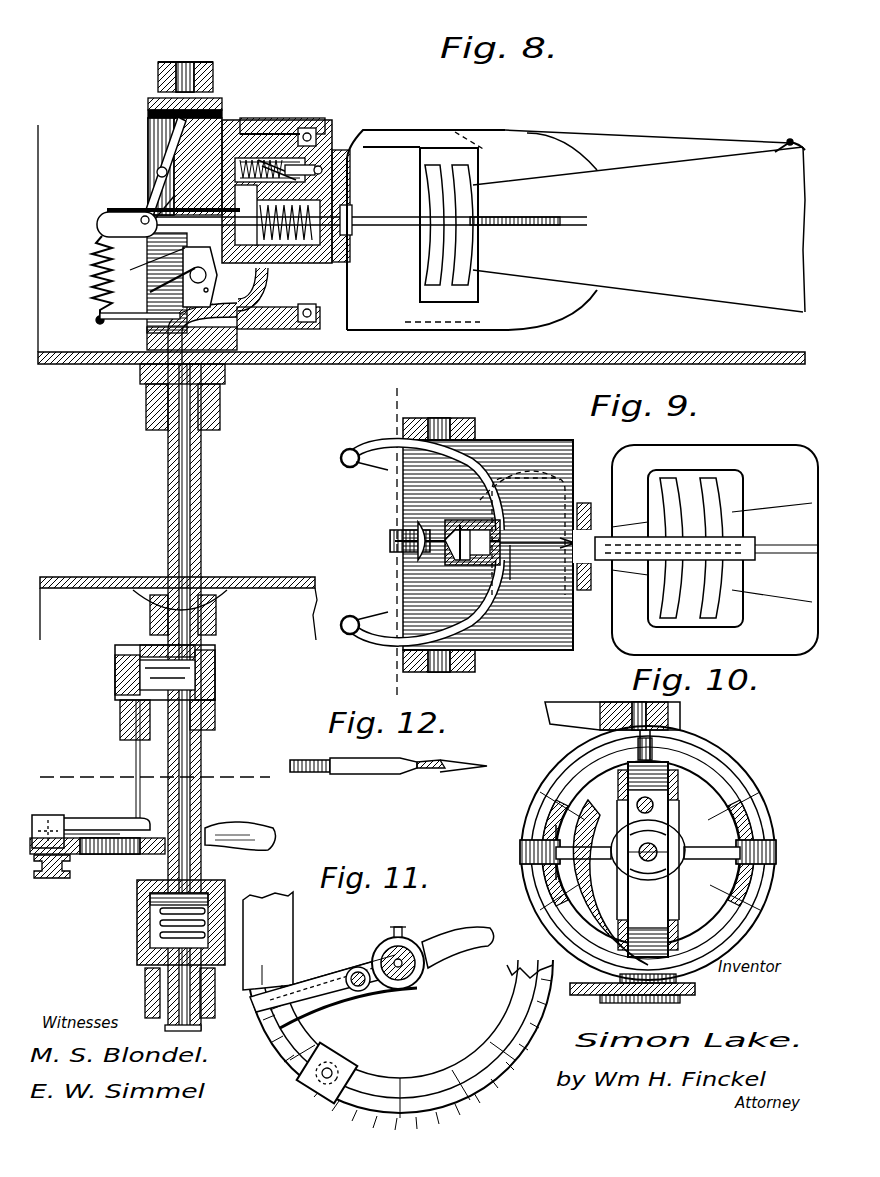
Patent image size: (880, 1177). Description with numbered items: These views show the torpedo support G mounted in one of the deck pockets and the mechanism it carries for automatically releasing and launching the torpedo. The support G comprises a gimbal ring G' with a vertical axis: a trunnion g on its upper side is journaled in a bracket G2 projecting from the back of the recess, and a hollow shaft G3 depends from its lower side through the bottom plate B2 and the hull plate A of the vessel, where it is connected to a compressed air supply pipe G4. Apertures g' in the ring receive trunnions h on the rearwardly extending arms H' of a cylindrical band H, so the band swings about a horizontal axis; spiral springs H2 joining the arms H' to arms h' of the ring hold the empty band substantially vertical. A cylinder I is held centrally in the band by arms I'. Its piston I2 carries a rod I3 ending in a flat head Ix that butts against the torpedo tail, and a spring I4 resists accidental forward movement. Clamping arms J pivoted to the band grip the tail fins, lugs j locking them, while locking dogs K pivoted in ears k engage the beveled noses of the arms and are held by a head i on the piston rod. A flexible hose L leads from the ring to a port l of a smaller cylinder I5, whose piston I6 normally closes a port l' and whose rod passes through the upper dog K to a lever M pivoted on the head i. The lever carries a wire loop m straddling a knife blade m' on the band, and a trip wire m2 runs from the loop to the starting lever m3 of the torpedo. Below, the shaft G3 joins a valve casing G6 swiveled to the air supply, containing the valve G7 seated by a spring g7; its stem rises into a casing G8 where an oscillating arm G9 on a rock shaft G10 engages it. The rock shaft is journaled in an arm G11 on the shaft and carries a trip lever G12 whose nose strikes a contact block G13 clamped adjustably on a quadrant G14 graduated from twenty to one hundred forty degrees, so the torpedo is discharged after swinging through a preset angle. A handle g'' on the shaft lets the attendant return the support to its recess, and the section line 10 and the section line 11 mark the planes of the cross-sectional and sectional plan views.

In FIG. 8, the trunnion g is at (185, 67).
In FIG. 10, the trunnion g is at (672, 732).
In FIG. 8, the bracket G2 is at (206, 64).
In FIG. 10, the bracket G2 is at (592, 703).
In FIG. 8, the support G is at (277, 163).
In FIG. 9, the support G is at (488, 526).
In FIG. 10, the support G is at (648, 853).
In FIG. 8, the gimbal ring G' is at (165, 148).
In FIG. 10, the gimbal ring G' is at (647, 847).
In FIG. 8, the wire loop m is at (275, 113).
In FIG. 9, the wire loop m is at (537, 573).
In FIG. 12, the wire loop m is at (373, 779).
In FIG. 8, the knife blade m' is at (270, 114).
In FIG. 9, the knife blade m' is at (455, 566).
In FIG. 10, the knife blade m' is at (681, 741).
In FIG. 12, the knife blade m' is at (411, 780).
In FIG. 8, the cylinder I5 is at (283, 157).
In FIG. 8, the piston I6 is at (290, 172).
In FIG. 8, the clamping arms J is at (378, 128).
In FIG. 9, the clamping arms J is at (628, 560).
In FIG. 8, the lugs j is at (440, 326).
In FIG. 9, the lugs j is at (700, 545).
In FIG. 8, the trip wire m2 is at (572, 126).
In FIG. 9, the trip wire m2 is at (790, 558).
In FIG. 12, the trip wire m2 is at (475, 763).
In FIG. 8, the tripping or starting lever m3 is at (782, 154).
In FIG. 8, the locking dogs K is at (156, 156).
In FIG. 9, the locking dogs K is at (445, 555).
In FIG. 10, the locking dogs K is at (672, 780).
In FIG. 8, the ears k is at (192, 291).
In FIG. 9, the ears k is at (458, 522).
In FIG. 10, the ears k is at (620, 798).
In FIG. 8, the lever M is at (160, 178).
In FIG. 9, the lever M is at (390, 541).
In FIG. 12, the lever M is at (304, 760).
In FIG. 8, the port l is at (303, 172).
In FIG. 8, the port l' is at (142, 209).
In FIG. 8, the arms H' is at (107, 222).
In FIG. 9, the arms H' is at (426, 553).
In FIG. 10, the arms H' is at (637, 839).
In FIG. 8, the spiral springs H2 is at (92, 262).
In FIG. 9, the spiral springs H2 is at (346, 468).
In FIG. 8, the band H is at (278, 349).
In FIG. 9, the band H is at (488, 533).
In FIG. 10, the band H is at (534, 824).
In FIG. 9, the trunnions h is at (439, 549).
In FIG. 10, the trunnions h is at (648, 853).
In FIG. 8, the arms h' is at (121, 328).
In FIG. 9, the arms h' is at (372, 541).
In FIG. 8, the cylinder I is at (341, 227).
In FIG. 9, the cylinder I is at (584, 529).
In FIG. 10, the cylinder I is at (656, 843).
In FIG. 10, the arms I' is at (642, 835).
In FIG. 8, the piston I2 is at (255, 284).
In FIG. 8, the piston rod I3 is at (151, 260).
In FIG. 10, the piston rod I3 is at (640, 858).
In FIG. 8, the spring I4 is at (327, 248).
In FIG. 8, the flat head Ix is at (337, 228).
In FIG. 8, the flexible pipe or hose section L is at (232, 335).
In FIG. 9, the flexible pipe or hose section L is at (498, 474).
In FIG. 10, the flexible pipe or hose section L is at (580, 888).
In FIG. 8, the bottom plates B2 is at (626, 357).
In FIG. 8, the hollow shaft G3 is at (167, 466).
In FIG. 11, the hollow shaft G3 is at (418, 972).
In FIG. 8, the deck plate A is at (88, 577).
In FIG. 8, the oscillating arm G9 is at (150, 662).
In FIG. 8, the casing G8 is at (215, 690).
In FIG. 8, the rock shaft G10 is at (134, 766).
In FIG. 11, the rock shaft G10 is at (362, 990).
In FIG. 8, the arm G11 is at (120, 855).
In FIG. 11, the arm G11 is at (345, 968).
In FIG. 8, the trip lever G12 is at (95, 817).
In FIG. 11, the trip lever G12 is at (328, 998).
In FIG. 8, the contact block G13 is at (40, 815).
In FIG. 11, the contact block G13 is at (306, 1088).
In FIG. 8, the quadrant G14 is at (60, 880).
In FIG. 11, the quadrant G14 is at (430, 1068).
In FIG. 8, the handle g'' is at (240, 829).
In FIG. 11, the handle g'' is at (458, 934).
In FIG. 8, the valve casing G6 is at (225, 895).
In FIG. 8, the packing G7 is at (158, 902).
In FIG. 8, the spring g7 is at (160, 922).
In FIG. 8, the compressed air supply pipe G4 is at (200, 1030).
In FIG. 8, the section line 11 is at (155, 775).
In FIG. 9, the section line 10 is at (394, 544).
In FIG. 9, the apertures g' is at (429, 550).
In FIG. 10, the apertures g' is at (647, 854).
In FIG. 9, the head i is at (416, 530).